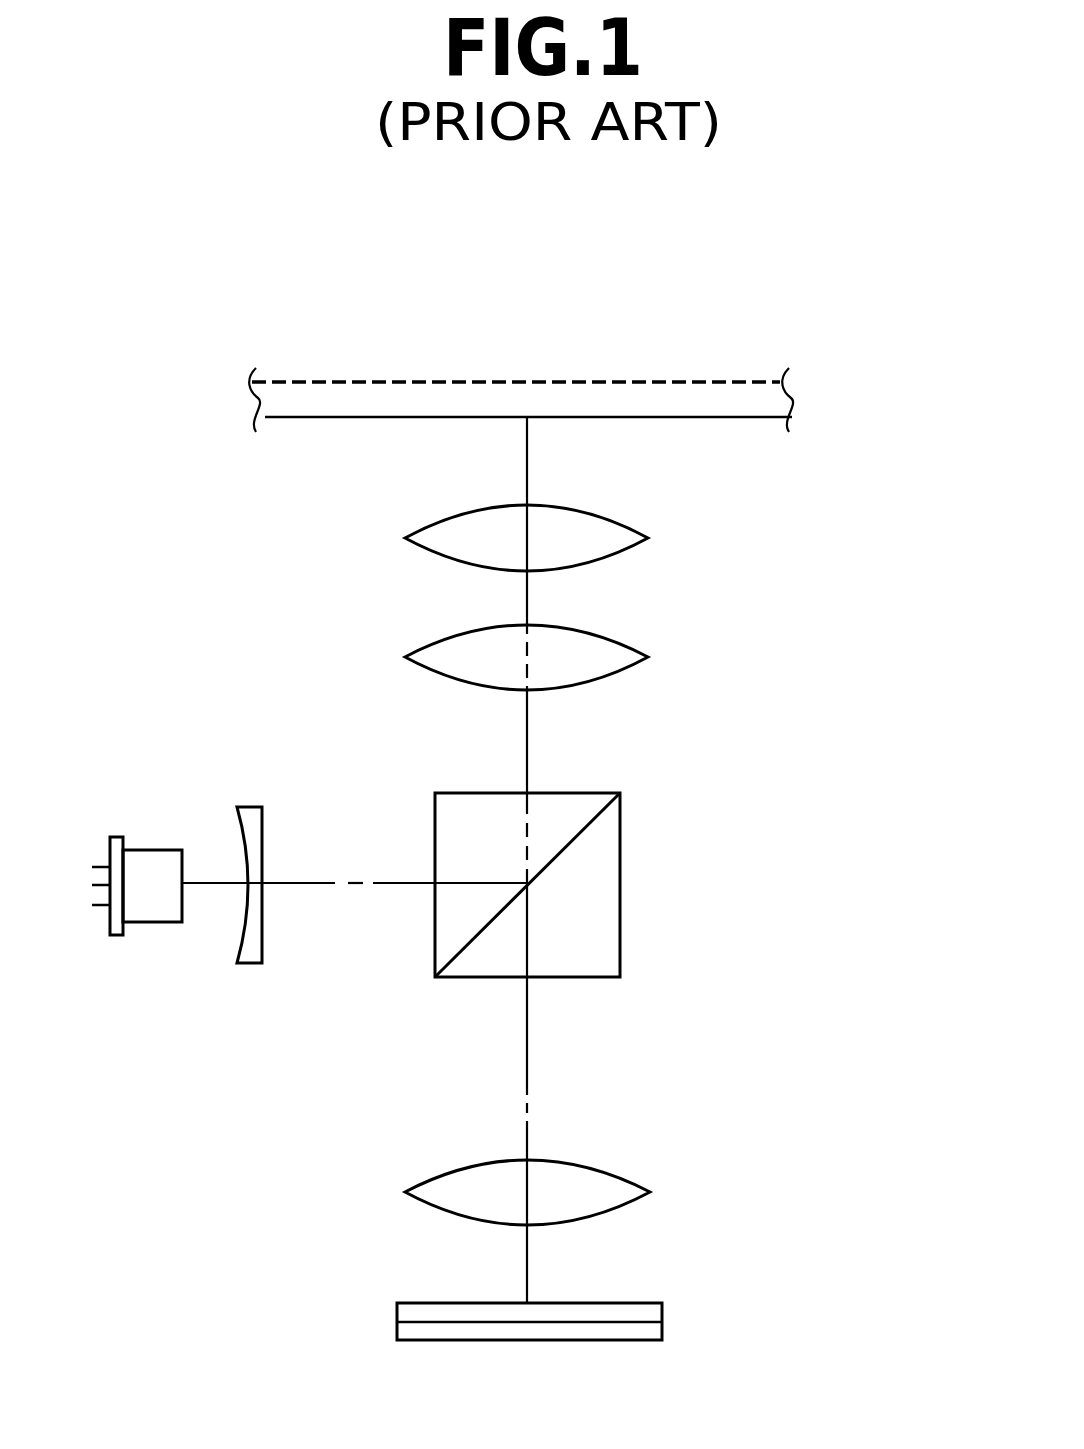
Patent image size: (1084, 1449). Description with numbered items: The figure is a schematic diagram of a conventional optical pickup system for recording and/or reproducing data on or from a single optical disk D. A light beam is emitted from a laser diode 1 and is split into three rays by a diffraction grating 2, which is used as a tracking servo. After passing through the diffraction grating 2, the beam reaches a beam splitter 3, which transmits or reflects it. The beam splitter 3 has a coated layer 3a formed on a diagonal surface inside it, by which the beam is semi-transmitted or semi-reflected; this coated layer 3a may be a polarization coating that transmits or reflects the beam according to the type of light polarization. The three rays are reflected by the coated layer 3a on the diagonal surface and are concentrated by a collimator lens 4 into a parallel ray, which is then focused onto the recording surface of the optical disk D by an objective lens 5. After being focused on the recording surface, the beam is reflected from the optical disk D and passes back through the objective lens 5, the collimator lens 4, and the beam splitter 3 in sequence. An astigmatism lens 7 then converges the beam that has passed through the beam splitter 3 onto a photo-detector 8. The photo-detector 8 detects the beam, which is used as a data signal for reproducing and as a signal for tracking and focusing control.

The laser diode 1 is at (153, 855).
The diffraction grating 2 is at (250, 807).
The beam splitter 3 is at (615, 905).
The coated layer 3a is at (588, 825).
The collimator lens 4 is at (633, 660).
The objective lens 5 is at (633, 540).
The astigmatism lens 7 is at (630, 1194).
The photo-detector 8 is at (630, 1313).
The optical disk D is at (792, 405).